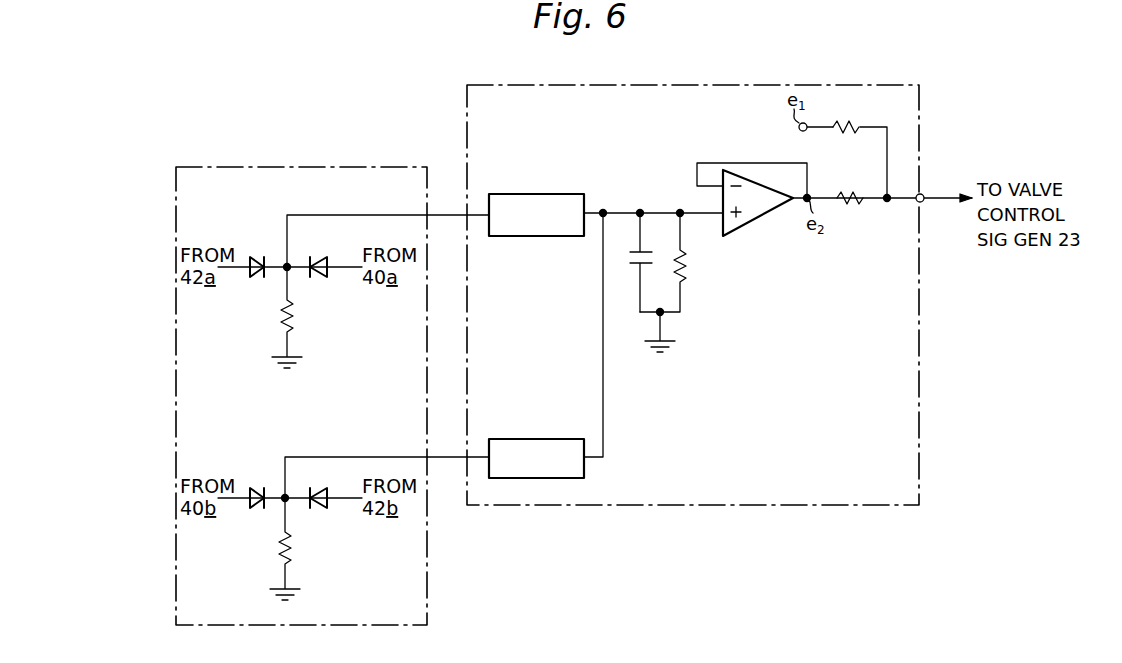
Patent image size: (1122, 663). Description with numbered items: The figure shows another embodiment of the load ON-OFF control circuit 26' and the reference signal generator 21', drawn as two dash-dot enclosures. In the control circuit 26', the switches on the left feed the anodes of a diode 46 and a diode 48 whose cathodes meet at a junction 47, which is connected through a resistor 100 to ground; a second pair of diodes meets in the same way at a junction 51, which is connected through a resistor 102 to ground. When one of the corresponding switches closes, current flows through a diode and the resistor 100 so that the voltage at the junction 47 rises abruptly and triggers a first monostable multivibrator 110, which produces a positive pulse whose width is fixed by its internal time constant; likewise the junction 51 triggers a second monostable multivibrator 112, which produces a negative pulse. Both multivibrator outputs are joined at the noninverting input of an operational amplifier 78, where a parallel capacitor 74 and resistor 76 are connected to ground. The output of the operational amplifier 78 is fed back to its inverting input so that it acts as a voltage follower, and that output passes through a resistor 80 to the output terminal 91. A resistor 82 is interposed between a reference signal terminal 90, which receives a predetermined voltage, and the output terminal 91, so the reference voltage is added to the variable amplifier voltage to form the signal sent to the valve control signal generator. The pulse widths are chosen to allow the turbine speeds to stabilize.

The load ON-OFF control circuit 26' is at (301, 376).
The reference signal generator 21' is at (693, 274).
The diode 48 is at (253, 258).
The diode 46 is at (320, 258).
The junction 47 is at (284, 272).
The resistor 100 is at (292, 318).
The junction 51 is at (282, 502).
The resistor 102 is at (292, 550).
The first monostable multivibrator 110 is at (526, 194).
The second monostable multivibrator 112 is at (524, 439).
The capacitor 74 is at (628, 257).
The resistor 76 is at (686, 272).
The operational amplifier 78 is at (754, 234).
The resistor 80 is at (853, 206).
The resistor 82 is at (856, 132).
The reference signal terminal 90 is at (806, 132).
The output terminal 91 is at (923, 194).